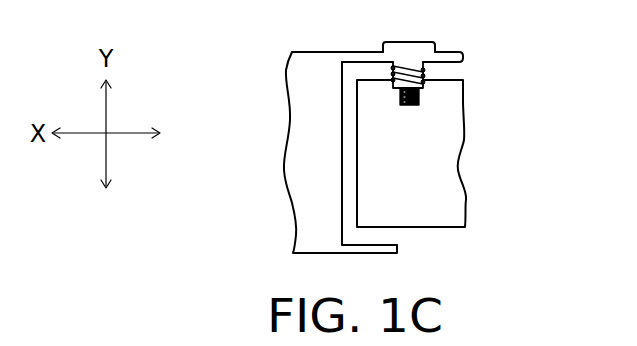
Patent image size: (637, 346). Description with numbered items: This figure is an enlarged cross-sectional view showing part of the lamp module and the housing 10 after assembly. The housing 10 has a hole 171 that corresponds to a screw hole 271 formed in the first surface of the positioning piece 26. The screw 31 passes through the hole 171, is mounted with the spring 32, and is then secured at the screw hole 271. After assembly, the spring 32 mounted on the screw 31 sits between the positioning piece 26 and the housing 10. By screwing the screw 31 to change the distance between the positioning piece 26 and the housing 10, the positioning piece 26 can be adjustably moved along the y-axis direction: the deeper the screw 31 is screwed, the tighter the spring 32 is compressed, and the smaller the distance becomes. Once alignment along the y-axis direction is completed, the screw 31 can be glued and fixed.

The housing 10 is at (307, 63).
The hole 171 is at (438, 52).
The screw 31 is at (412, 45).
The spring 32 is at (428, 75).
The screw hole 271 is at (420, 97).
The positioning piece 26 is at (452, 229).